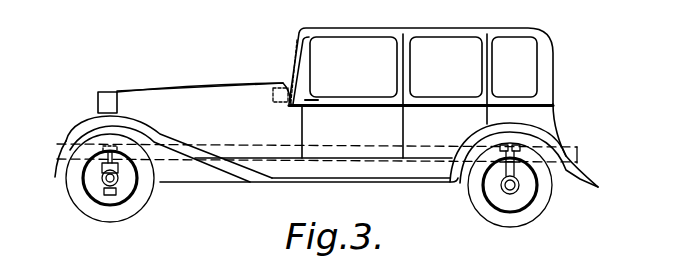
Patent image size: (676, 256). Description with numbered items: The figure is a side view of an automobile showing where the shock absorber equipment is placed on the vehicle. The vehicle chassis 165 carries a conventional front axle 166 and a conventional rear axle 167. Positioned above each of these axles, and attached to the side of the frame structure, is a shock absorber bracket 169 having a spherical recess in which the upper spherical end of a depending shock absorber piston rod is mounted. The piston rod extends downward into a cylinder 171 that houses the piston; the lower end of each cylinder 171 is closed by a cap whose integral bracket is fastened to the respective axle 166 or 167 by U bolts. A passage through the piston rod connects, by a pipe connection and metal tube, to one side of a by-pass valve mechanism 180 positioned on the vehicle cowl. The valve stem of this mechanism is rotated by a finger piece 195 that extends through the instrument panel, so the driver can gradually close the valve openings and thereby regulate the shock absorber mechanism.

The vehicle chassis 165 is at (213, 144).
The front axle 166 is at (89, 200).
The rear axle 167 is at (525, 182).
The shock absorber bracket 169 is at (113, 145).
The cylinder 171 is at (100, 175).
The by-pass valve mechanism 180 is at (283, 87).
The finger piece 195 is at (312, 98).